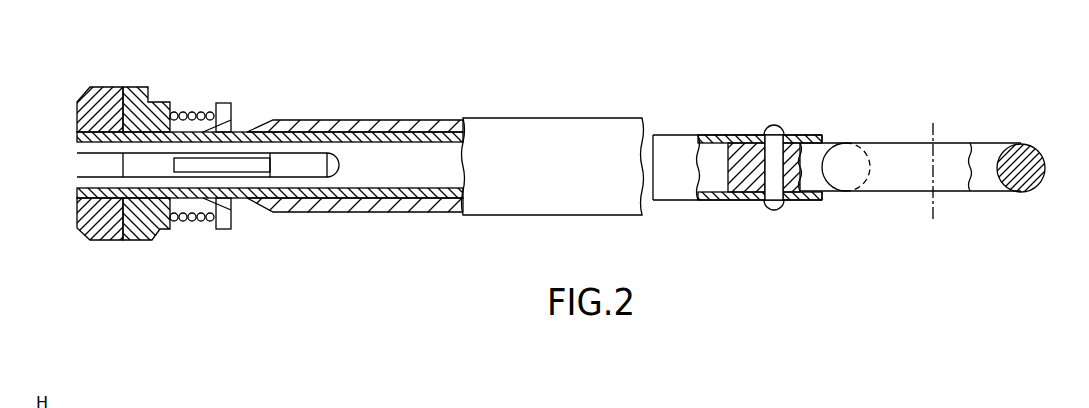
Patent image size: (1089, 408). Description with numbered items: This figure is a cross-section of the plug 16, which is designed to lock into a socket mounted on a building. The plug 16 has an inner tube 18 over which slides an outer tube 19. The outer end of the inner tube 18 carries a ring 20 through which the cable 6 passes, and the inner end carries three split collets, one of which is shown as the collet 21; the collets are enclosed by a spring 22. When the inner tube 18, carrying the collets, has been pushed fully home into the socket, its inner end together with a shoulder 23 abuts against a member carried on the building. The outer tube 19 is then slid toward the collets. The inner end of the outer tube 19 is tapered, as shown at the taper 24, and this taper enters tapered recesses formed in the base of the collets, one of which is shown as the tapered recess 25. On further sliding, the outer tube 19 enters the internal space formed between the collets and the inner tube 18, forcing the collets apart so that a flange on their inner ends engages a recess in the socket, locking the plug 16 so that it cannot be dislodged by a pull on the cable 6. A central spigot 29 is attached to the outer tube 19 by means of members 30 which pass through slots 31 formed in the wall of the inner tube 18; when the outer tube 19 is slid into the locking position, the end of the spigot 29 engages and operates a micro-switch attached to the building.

The plug 16 is at (547, 119).
The inner tube 18 is at (352, 205).
The outer tube 19 is at (413, 120).
The ring 20 is at (1008, 152).
The split collet 21 is at (142, 232).
The spring 22 is at (192, 111).
The shoulder 23 is at (108, 235).
The taper 24 is at (247, 198).
The tapered recess 25 is at (247, 132).
The central spigot 29 is at (203, 168).
The member 30 is at (311, 160).
The slot 31 is at (145, 158).
The cable 6 is at (933, 127).